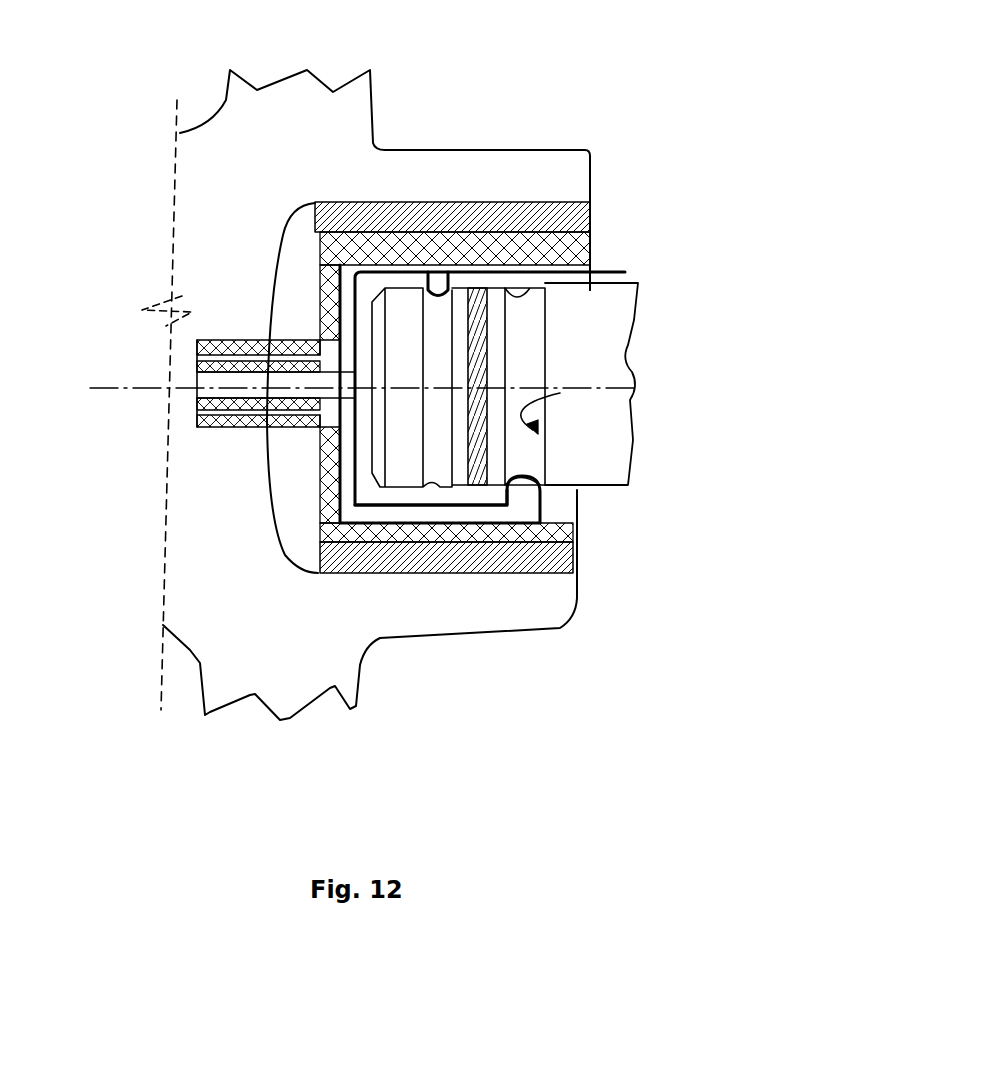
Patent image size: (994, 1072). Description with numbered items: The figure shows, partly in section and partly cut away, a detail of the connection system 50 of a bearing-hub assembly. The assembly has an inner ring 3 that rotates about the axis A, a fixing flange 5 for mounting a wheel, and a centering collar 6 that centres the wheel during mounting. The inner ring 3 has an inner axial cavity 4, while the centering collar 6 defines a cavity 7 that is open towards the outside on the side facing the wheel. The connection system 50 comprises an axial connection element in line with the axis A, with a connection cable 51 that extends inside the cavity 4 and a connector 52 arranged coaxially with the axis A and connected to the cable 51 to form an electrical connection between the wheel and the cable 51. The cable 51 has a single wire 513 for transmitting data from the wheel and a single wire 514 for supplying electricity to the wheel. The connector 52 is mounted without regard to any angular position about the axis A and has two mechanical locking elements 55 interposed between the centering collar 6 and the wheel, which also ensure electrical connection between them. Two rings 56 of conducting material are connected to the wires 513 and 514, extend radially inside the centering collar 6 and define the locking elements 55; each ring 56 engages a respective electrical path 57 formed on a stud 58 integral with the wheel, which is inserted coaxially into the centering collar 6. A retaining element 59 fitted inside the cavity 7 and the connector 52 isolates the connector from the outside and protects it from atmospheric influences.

The inner ring 3 is at (213, 222).
The inner axial cavity 4 is at (263, 398).
The fixing flange 5 is at (253, 107).
The centering collar 6 is at (547, 600).
The cavity 7 is at (278, 267).
The connection system 50 is at (680, 166).
The connection cable 51 is at (280, 385).
The connector 52 is at (478, 218).
The wire 513 is at (487, 232).
The wire 514 is at (425, 510).
The mechanical locking element 55 is at (592, 273).
The ring 56 is at (520, 508).
The electrical path 57 is at (560, 393).
The stud 58 is at (605, 428).
The retaining element 59 is at (592, 215).
The axis A is at (120, 385).